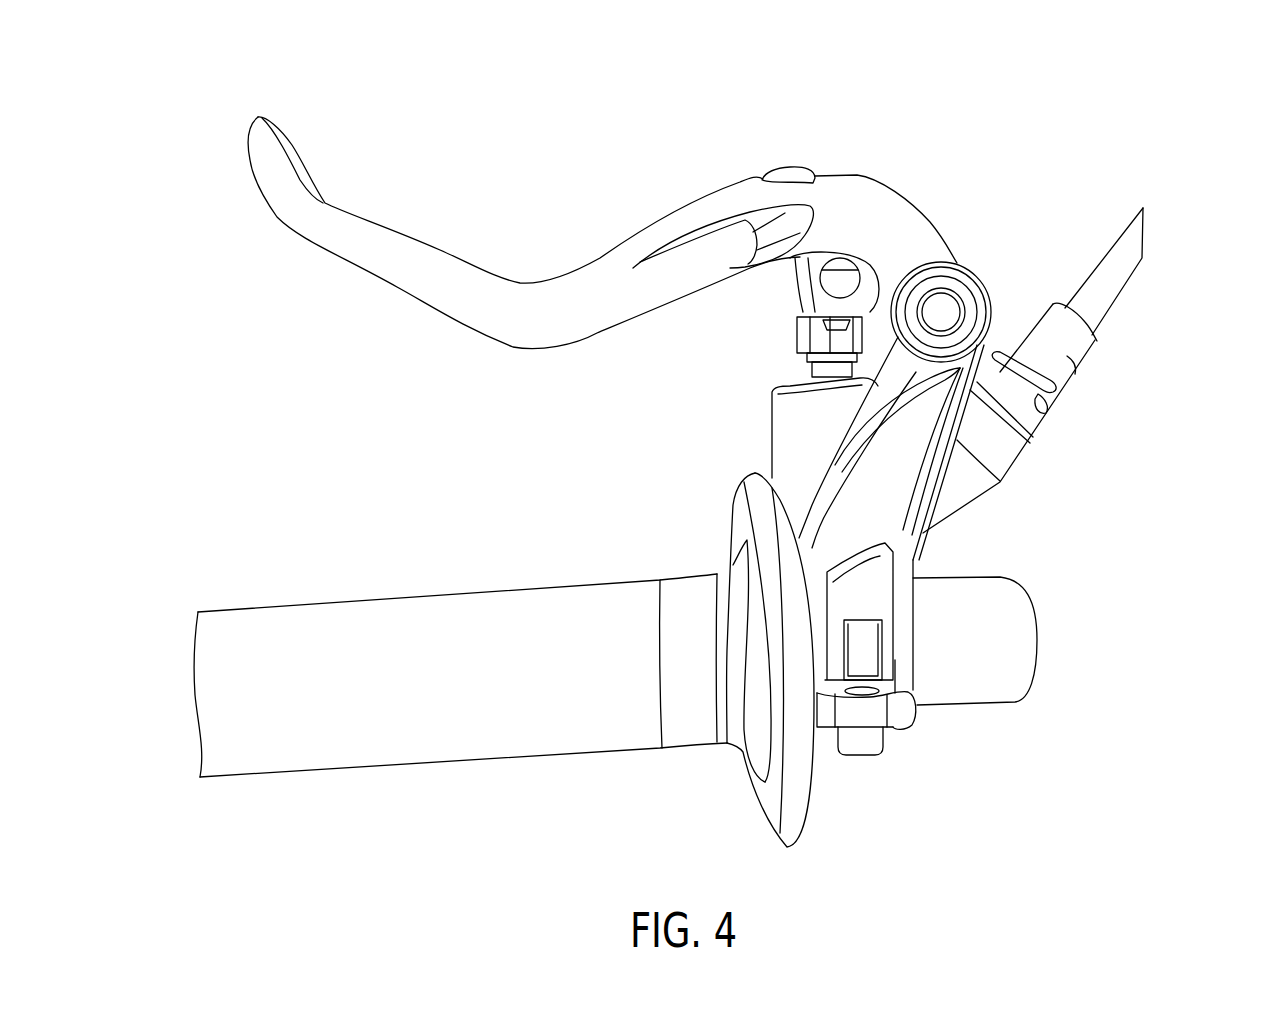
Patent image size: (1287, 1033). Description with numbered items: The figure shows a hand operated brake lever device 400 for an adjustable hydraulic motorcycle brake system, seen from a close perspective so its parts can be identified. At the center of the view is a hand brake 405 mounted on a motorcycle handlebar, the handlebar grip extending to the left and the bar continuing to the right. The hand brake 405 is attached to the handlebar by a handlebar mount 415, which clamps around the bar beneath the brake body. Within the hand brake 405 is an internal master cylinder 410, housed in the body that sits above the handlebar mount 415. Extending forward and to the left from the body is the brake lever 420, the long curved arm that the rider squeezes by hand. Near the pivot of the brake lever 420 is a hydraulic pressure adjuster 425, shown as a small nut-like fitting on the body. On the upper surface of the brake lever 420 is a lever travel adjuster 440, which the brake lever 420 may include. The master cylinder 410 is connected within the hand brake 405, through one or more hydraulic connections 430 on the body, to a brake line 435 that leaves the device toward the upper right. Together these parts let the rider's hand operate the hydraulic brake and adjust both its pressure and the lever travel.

The hand operated brake lever device 400 is at (1160, 107).
The hand brake 405 is at (905, 638).
The master cylinder 410 is at (913, 613).
The handlebar mount 415 is at (897, 728).
The brake lever 420 is at (251, 163).
The hydraulic pressure adjuster 425 is at (800, 334).
The hydraulic connections 430 is at (902, 487).
The brake line 435 is at (1123, 286).
The lever travel adjuster 440 is at (785, 167).